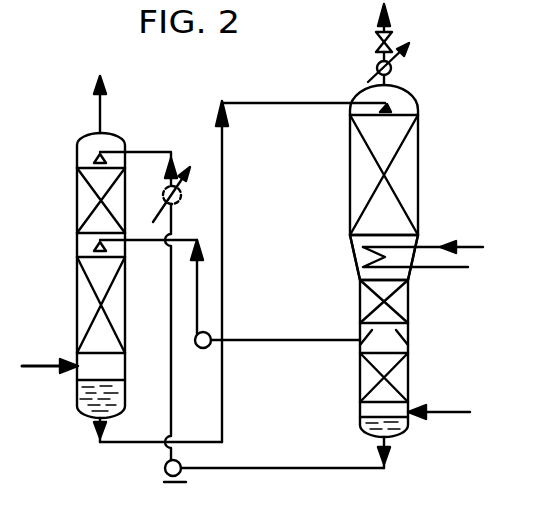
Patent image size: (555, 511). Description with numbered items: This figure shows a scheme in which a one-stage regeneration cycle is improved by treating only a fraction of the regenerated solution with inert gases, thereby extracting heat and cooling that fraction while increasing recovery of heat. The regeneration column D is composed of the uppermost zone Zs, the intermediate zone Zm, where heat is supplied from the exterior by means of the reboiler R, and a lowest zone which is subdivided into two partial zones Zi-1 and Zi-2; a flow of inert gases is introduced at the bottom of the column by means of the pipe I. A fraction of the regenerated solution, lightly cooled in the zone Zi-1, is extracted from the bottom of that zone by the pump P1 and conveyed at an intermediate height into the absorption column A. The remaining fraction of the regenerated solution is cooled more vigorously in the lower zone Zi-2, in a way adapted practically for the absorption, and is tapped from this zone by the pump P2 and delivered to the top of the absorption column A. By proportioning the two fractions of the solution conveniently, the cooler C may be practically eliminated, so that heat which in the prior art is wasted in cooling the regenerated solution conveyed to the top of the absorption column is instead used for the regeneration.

The absorption column A is at (73, 259).
The cooler C is at (173, 194).
The regeneration column D is at (373, 236).
The pump P1 is at (197, 361).
The pump P2 is at (161, 478).
The reboiler R is at (431, 252).
The pipe I is at (439, 400).
The uppermost zone Zs is at (363, 175).
The intermediate zone Zm is at (362, 257).
The partial zone Zi-1 is at (357, 302).
The partial zone Zi-2 is at (357, 379).